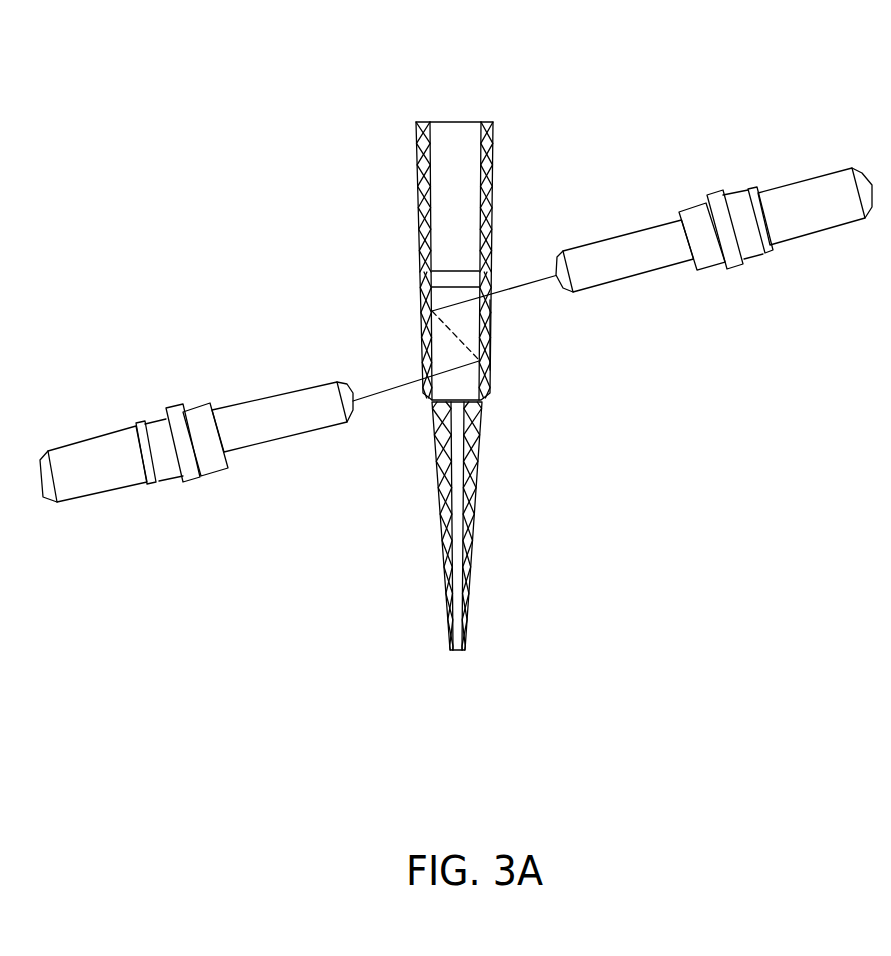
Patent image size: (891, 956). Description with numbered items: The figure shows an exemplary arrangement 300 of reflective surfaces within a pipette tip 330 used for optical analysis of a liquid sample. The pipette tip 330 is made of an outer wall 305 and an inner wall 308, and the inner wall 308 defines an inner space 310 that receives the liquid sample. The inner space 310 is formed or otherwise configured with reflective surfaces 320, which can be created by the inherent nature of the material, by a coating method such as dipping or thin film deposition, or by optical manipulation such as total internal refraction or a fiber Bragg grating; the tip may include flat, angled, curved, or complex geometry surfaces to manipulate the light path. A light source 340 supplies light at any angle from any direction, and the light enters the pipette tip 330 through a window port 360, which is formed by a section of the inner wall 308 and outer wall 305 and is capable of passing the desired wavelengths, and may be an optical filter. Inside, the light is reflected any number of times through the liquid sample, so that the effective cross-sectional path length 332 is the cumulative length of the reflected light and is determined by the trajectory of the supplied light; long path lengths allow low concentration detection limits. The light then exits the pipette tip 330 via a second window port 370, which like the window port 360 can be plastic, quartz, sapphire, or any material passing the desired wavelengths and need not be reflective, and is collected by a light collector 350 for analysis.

The needle assembly 300 is at (323, 71).
The outer wall 305 is at (494, 137).
The inner wall 308 is at (417, 152).
The inner space 310 is at (453, 200).
The reflective surfaces 320 is at (422, 302).
The pipette tip 330 is at (472, 523).
The cross-sectional path length 332 is at (490, 303).
The light source 340 is at (260, 417).
The light collector 350 is at (645, 257).
The window port 360 is at (423, 377).
The window port 370 is at (493, 270).